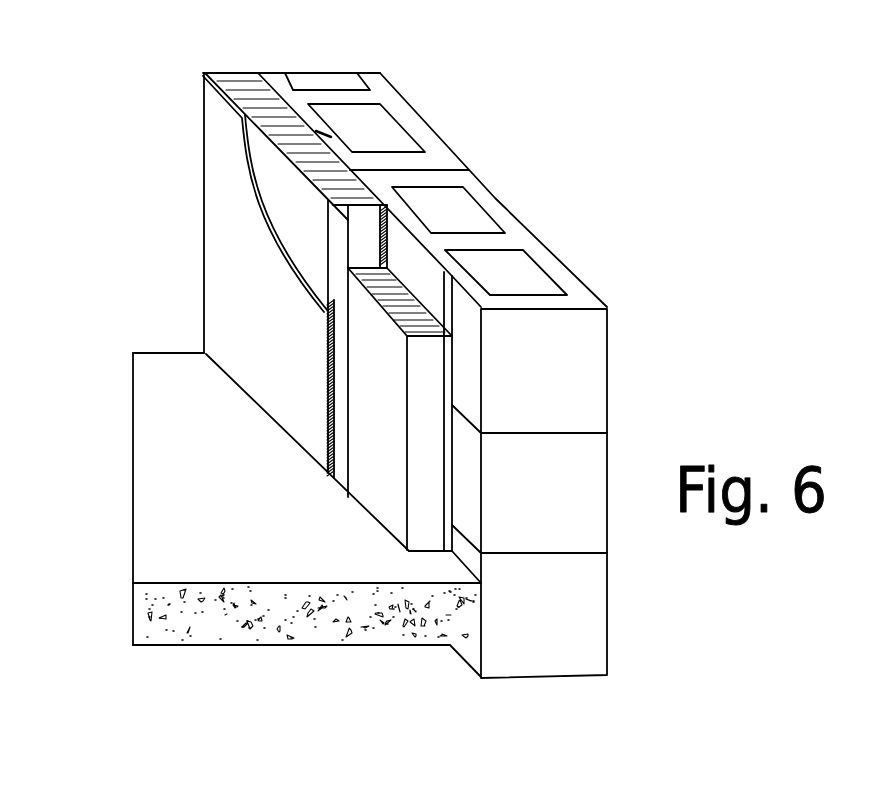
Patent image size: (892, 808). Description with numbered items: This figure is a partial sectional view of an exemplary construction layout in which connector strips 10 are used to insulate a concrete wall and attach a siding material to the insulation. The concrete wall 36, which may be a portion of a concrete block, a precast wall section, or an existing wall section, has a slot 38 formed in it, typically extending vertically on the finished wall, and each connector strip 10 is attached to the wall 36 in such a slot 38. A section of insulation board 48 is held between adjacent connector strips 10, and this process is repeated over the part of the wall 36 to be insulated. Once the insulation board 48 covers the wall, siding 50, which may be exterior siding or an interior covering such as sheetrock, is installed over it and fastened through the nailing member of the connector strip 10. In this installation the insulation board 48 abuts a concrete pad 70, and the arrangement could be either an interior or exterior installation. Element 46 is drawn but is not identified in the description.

The connector strip 10 is at (364, 236).
The concrete wall 36 is at (590, 470).
The slot 38 is at (444, 274).
The insulation layer 46 is at (474, 364).
The insulation board 48 is at (290, 217).
The siding 50 is at (215, 208).
The concrete pad 70 is at (150, 528).